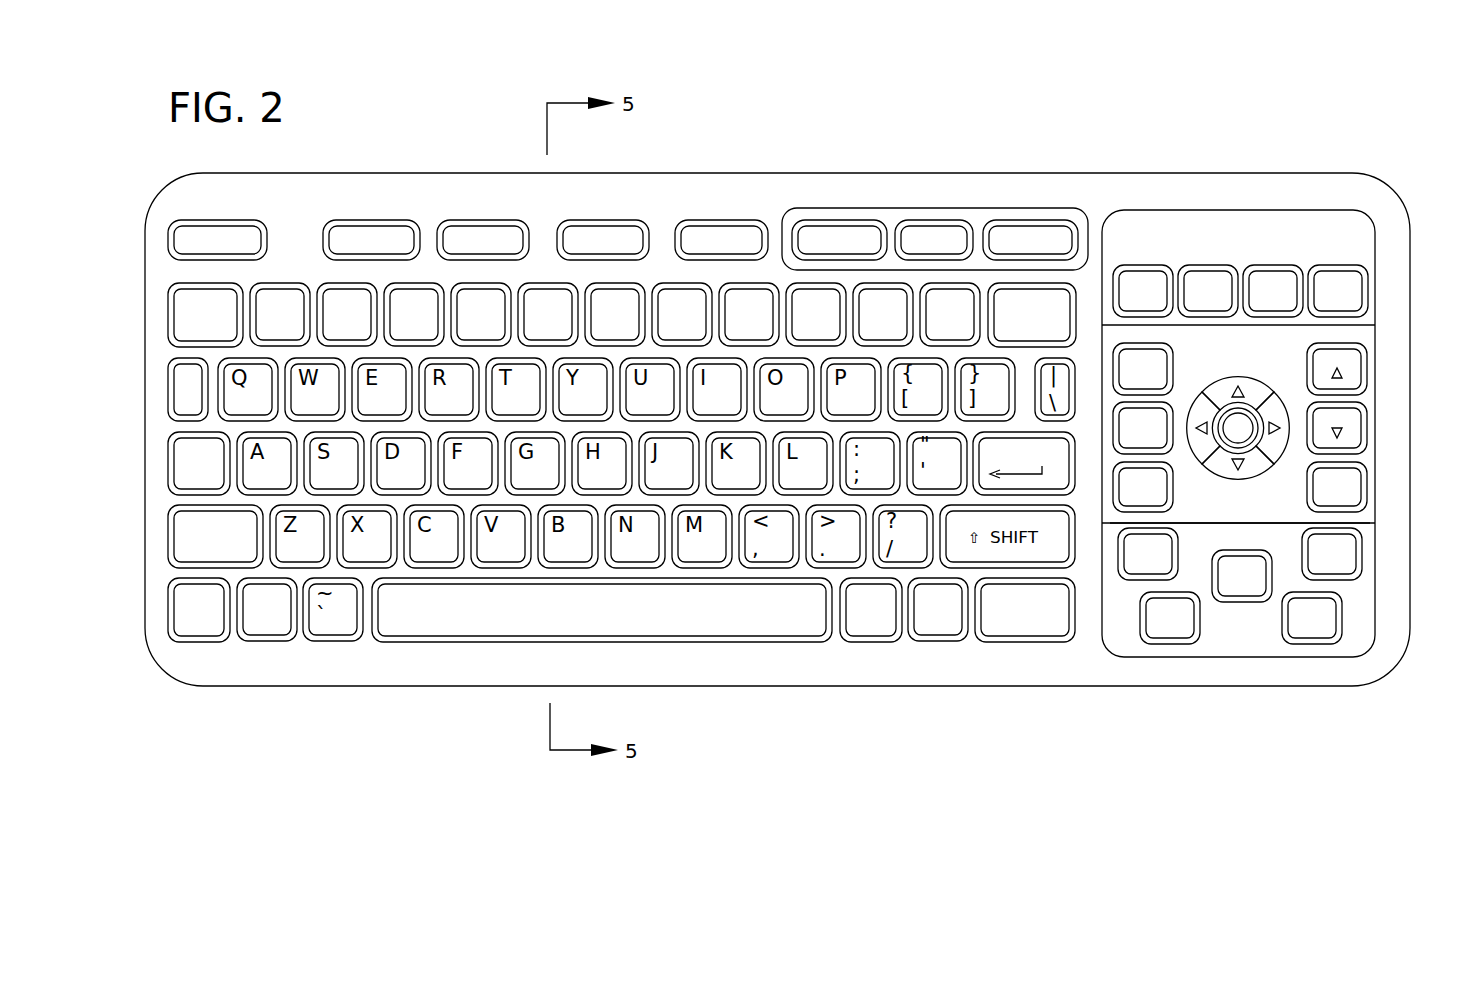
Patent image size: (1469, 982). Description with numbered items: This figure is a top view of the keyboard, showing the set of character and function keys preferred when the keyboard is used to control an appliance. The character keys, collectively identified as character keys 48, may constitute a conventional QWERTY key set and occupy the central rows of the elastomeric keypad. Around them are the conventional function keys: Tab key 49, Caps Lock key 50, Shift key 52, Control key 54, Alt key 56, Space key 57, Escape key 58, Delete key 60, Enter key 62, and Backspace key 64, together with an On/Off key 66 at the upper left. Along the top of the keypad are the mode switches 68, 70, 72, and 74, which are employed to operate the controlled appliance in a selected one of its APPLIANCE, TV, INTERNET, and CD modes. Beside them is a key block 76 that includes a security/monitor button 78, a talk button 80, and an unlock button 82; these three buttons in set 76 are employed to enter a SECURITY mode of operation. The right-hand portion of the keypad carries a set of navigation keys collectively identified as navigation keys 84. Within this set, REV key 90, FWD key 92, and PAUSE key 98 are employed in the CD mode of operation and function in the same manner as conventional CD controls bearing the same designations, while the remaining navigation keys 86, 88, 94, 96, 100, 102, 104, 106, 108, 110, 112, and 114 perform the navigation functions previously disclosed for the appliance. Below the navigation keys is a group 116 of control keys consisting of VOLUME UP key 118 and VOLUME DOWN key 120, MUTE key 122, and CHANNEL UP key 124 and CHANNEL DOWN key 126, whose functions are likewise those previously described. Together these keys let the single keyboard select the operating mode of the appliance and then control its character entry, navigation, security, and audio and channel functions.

The character keys 48 is at (717, 285).
The Tab key 49 is at (168, 392).
The Caps Lock key 50 is at (168, 465).
The Shift key 52 is at (168, 540).
The Control key 54 is at (185, 640).
The Alt key 56 is at (268, 640).
The Space key 57 is at (755, 640).
The Escape key 58 is at (935, 640).
The Delete key 60 is at (1020, 640).
The Enter key 62 is at (1075, 485).
The Backspace key 64 is at (1092, 283).
The On/Off key 66 is at (230, 220).
The mode switch 68 is at (370, 220).
The mode switch 70 is at (484, 220).
The mode switch 72 is at (597, 220).
The mode switch 74 is at (737, 220).
The key block 76 is at (935, 177).
The security/monitor button 78 is at (812, 218).
The talk button 80 is at (938, 220).
The unlock button 82 is at (1016, 220).
The navigation keys 84 is at (1422, 395).
The previous key 86 is at (1158, 265).
The next key 88 is at (1206, 265).
The REV key 90 is at (1270, 265).
The FWD key 92 is at (1348, 265).
The restart key 94 is at (1175, 362).
The stop key 96 is at (1113, 430).
The PAUSE key 98 is at (1165, 512).
The scroll up key 100 is at (1307, 362).
The scroll down key 102 is at (1368, 440).
The options key 104 is at (1300, 512).
The left cursor key 106 is at (1192, 455).
The right cursor key 108 is at (1290, 478).
The up cursor key 110 is at (1232, 385).
The down cursor key 112 is at (1240, 478).
The go key 114 is at (1250, 437).
The group of control keys 116 is at (1360, 604).
The VOLUME UP key 118 is at (1130, 580).
The VOLUME DOWN key 120 is at (1170, 645).
The MUTE key 122 is at (1250, 602).
The CHANNEL UP key 124 is at (1362, 553).
The CHANNEL DOWN key 126 is at (1312, 645).